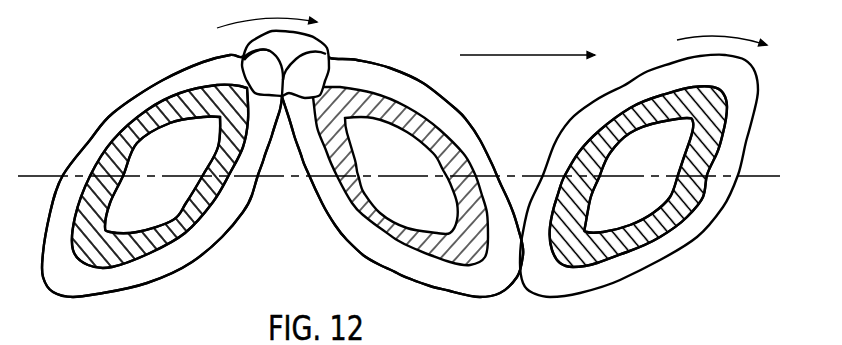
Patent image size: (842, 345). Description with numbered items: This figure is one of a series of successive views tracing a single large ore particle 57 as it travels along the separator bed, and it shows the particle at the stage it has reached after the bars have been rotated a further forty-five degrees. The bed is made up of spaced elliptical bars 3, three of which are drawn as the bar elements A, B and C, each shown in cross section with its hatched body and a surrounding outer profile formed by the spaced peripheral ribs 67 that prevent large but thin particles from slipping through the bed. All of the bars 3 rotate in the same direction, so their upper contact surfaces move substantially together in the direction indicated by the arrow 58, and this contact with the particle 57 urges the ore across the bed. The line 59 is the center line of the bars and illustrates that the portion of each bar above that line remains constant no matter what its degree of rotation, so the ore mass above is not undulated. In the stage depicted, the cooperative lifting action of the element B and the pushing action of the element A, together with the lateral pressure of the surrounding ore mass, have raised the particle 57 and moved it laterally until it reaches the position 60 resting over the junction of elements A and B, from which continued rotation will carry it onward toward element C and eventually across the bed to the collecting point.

The bars 3 is at (138, 136).
The particle 57 is at (252, 40).
The arrow 58 is at (540, 56).
The center line 59 is at (513, 175).
The position 60 is at (300, 46).
The peripheral ribs 67 is at (323, 190).
The bar element A is at (153, 238).
The bar element B is at (413, 235).
The bar element C is at (640, 235).